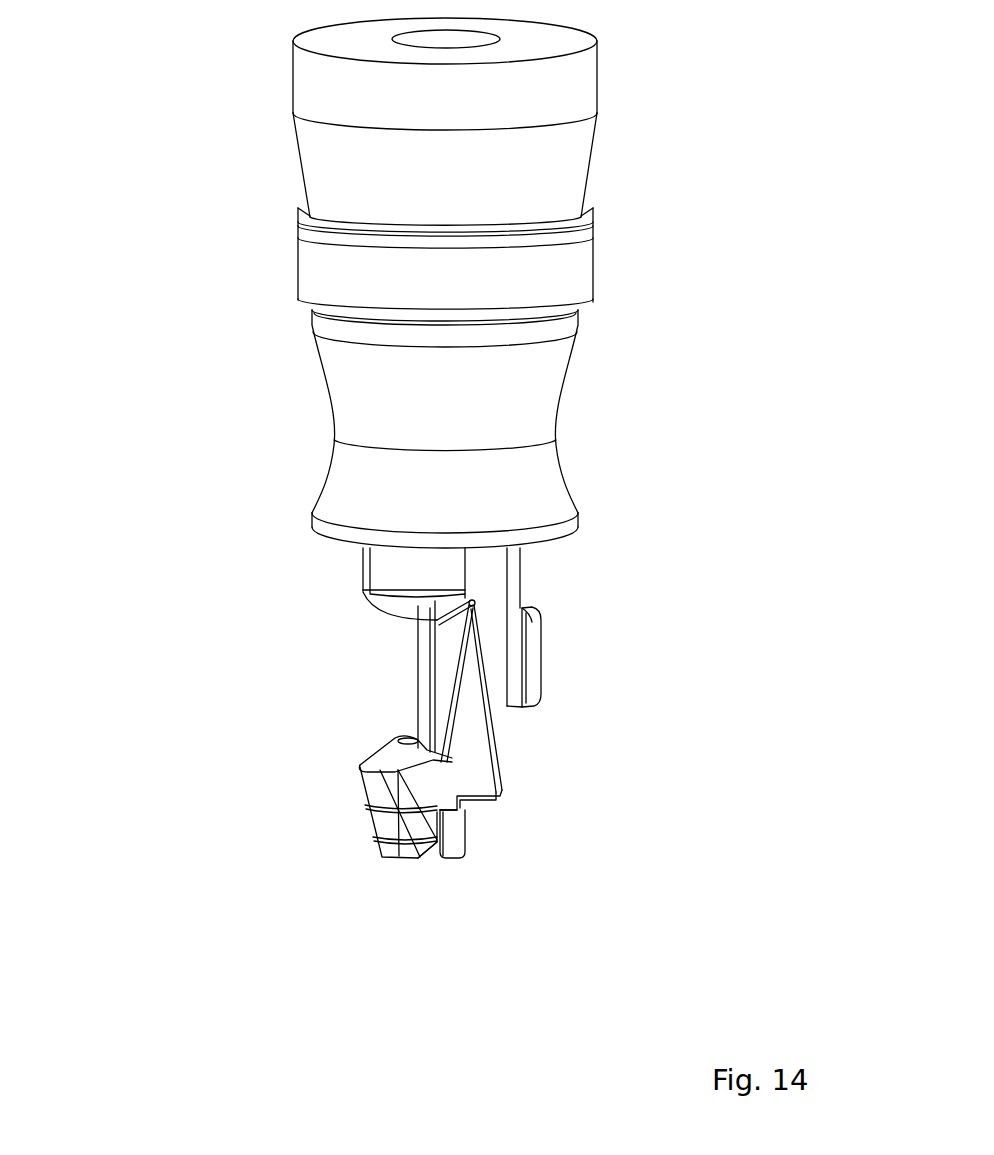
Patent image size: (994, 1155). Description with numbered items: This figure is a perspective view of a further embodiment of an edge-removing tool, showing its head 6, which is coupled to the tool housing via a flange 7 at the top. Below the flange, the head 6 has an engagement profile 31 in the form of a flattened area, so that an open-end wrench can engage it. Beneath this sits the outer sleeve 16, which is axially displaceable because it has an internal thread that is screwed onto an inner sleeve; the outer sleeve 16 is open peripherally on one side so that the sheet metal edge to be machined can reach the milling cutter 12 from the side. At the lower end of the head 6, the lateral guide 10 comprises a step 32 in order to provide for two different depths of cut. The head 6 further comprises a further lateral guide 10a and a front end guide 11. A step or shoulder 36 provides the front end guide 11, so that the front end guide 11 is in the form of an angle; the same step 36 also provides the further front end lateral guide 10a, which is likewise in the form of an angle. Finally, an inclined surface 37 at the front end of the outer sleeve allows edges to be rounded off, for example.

The head 6 is at (210, 362).
The flange 7 is at (367, 100).
The engagement profile 31 is at (548, 272).
The outer sleeve 16 is at (505, 443).
The lateral guide 10 is at (360, 711).
The step 32 is at (432, 685).
The further lateral guide 10a is at (480, 803).
The step or shoulder 36 is at (457, 810).
The milling cutter 12 is at (455, 837).
The front end guide 11 is at (444, 830).
The inclined surface 37 is at (420, 857).